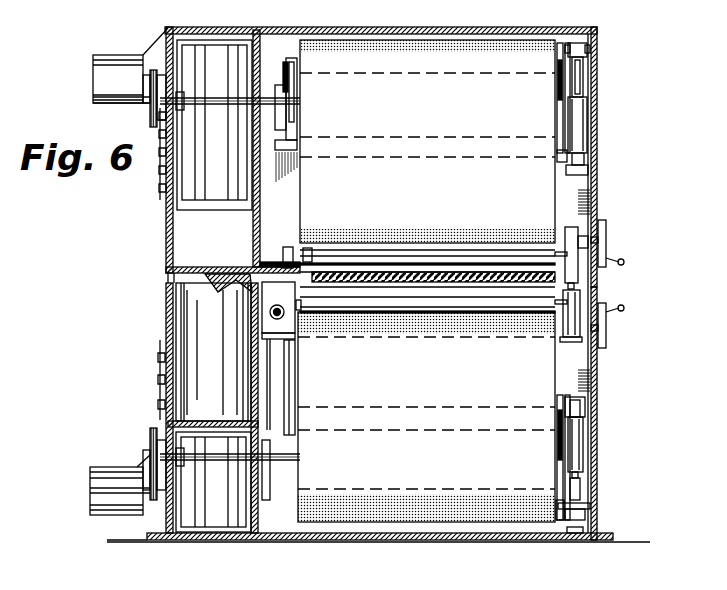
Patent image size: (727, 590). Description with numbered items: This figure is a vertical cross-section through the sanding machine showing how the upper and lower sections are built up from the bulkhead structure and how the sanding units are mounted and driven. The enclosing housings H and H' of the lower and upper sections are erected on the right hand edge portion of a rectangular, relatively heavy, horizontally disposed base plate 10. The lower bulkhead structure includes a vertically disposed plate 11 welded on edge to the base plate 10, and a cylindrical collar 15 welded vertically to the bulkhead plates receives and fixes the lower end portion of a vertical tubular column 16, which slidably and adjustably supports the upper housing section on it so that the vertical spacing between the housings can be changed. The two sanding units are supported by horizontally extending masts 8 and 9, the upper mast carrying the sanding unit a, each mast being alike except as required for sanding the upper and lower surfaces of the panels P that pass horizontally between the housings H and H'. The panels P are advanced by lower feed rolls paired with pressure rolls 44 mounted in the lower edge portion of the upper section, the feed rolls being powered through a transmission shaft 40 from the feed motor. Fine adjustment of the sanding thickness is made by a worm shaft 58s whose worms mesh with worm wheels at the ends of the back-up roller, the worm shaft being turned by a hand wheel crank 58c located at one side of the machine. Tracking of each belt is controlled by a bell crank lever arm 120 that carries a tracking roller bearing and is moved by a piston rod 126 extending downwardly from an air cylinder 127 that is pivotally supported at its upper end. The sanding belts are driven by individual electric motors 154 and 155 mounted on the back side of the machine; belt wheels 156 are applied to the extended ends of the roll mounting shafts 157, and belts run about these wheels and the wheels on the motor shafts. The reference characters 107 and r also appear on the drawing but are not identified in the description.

The mast 8 is at (270, 148).
The mast 9 is at (268, 377).
The base plate 10 is at (375, 541).
The plate 11 is at (167, 325).
The cylindrical collar 15 is at (180, 341).
The tubular column 16 is at (197, 385).
The transmission shaft 40 is at (413, 297).
The pressure roll 44 is at (382, 255).
The worm shaft 58s is at (588, 240).
The hand wheel crank 58c is at (608, 225).
The frame 107 is at (312, 565).
The lever arm 120 is at (562, 503).
The piston rod 126 is at (578, 478).
The air cylinder 127 is at (577, 120).
The electric motor 154 is at (100, 98).
The electric motor 155 is at (107, 490).
The belt wheel 156 is at (160, 83).
The roll mounting shaft 157 is at (217, 110).
The sanding unit a is at (518, 98).
The lower roller r is at (518, 380).
The panel P is at (360, 278).
The housing H is at (618, 413).
The upper housing H' is at (432, 157).